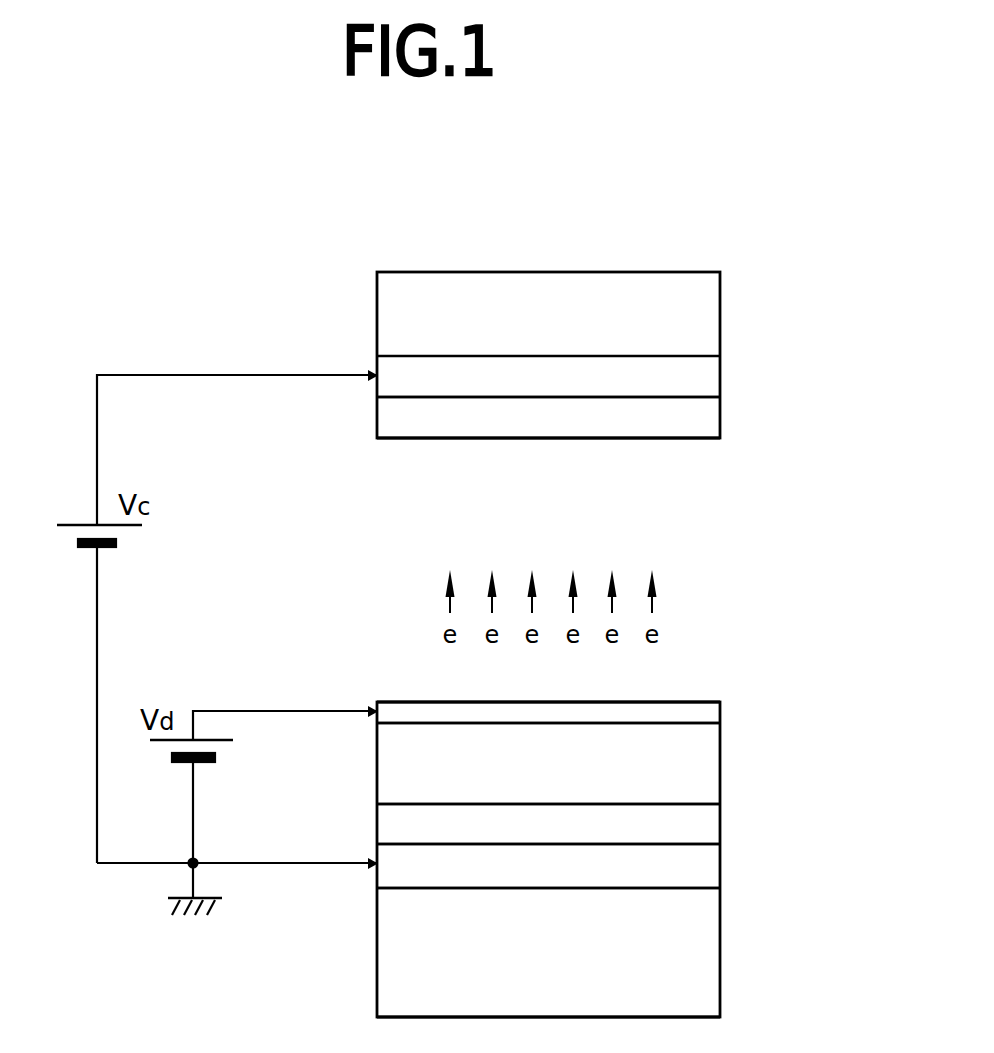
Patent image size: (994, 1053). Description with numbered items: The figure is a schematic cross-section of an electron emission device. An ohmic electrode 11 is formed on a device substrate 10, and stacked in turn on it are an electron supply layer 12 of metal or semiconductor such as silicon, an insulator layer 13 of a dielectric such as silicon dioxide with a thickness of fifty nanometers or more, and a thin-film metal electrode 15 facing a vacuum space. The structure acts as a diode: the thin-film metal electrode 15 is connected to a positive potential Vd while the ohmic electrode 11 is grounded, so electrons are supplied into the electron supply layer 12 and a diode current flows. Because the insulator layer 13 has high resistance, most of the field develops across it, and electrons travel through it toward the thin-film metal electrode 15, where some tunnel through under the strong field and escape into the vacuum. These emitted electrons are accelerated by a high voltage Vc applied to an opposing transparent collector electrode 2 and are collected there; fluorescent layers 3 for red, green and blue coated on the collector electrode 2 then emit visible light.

The collector electrode 2 is at (718, 372).
The fluorescent layers 3 is at (712, 415).
The thin-film metal electrode 15 is at (716, 712).
The insulator layer 13 is at (712, 777).
The electron supply layer 12 is at (712, 830).
The ohmic electrode 11 is at (712, 862).
The device substrate 10 is at (712, 960).